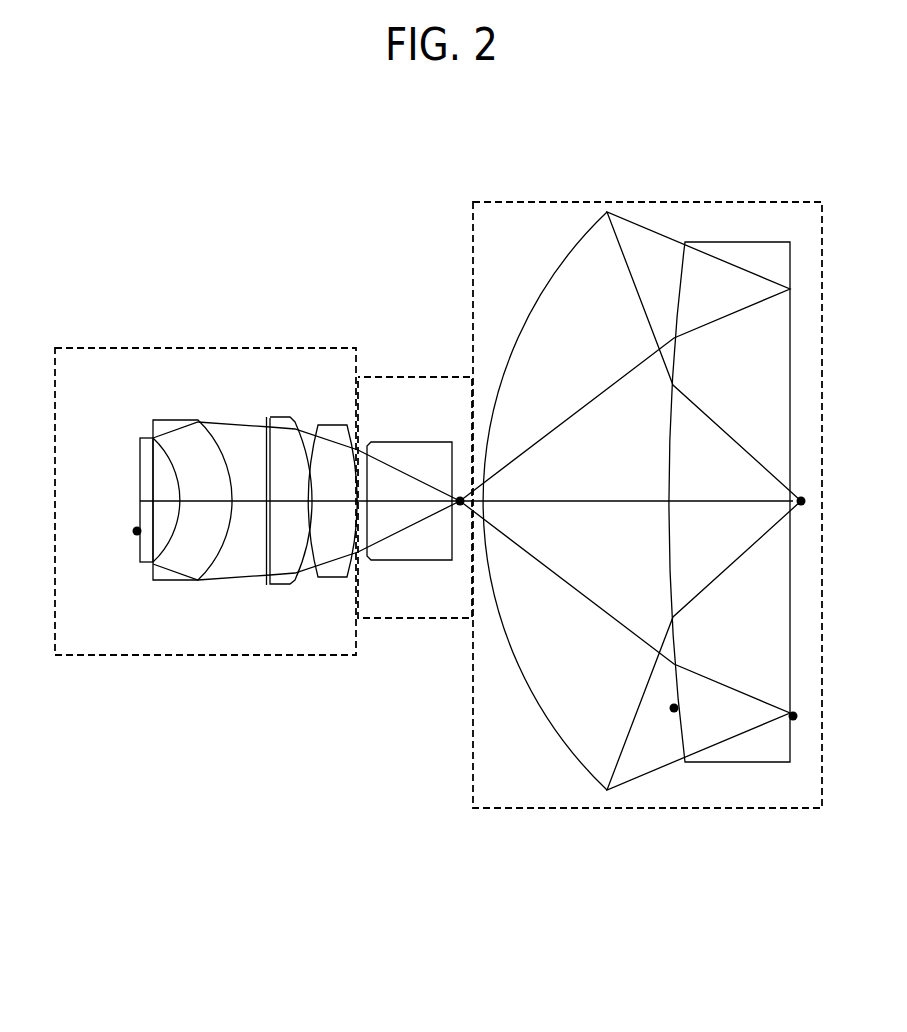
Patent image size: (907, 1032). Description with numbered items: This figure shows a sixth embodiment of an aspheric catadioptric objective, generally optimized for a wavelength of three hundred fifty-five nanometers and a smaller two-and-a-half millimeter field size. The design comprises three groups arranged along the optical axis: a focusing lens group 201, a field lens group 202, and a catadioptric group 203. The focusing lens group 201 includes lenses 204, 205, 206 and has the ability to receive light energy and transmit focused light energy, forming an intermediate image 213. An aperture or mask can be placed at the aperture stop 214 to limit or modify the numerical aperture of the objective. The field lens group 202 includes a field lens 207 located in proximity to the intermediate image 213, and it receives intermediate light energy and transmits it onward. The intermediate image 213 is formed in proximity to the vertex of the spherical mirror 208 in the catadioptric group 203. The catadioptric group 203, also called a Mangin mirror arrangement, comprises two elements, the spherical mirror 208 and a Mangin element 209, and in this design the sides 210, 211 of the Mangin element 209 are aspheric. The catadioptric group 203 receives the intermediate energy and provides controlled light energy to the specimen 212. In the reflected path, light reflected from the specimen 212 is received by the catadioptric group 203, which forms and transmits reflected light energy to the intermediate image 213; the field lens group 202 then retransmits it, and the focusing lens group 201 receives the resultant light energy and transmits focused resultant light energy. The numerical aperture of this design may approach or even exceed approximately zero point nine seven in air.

The focusing lens group 201 is at (190, 517).
The field lens group 202 is at (364, 577).
The catadioptric group 203 is at (688, 529).
The lens 204 is at (165, 474).
The lens 205 is at (281, 481).
The lens 206 is at (329, 476).
The field lens 207 is at (409, 481).
The spherical mirror 208 is at (545, 501).
The Mangin element 209 is at (729, 484).
The side of the Mangin element 210 is at (674, 708).
The side of the Mangin element 211 is at (793, 716).
The specimen 212 is at (801, 501).
The intermediate image 213 is at (460, 502).
The aperture stop 214 is at (137, 531).